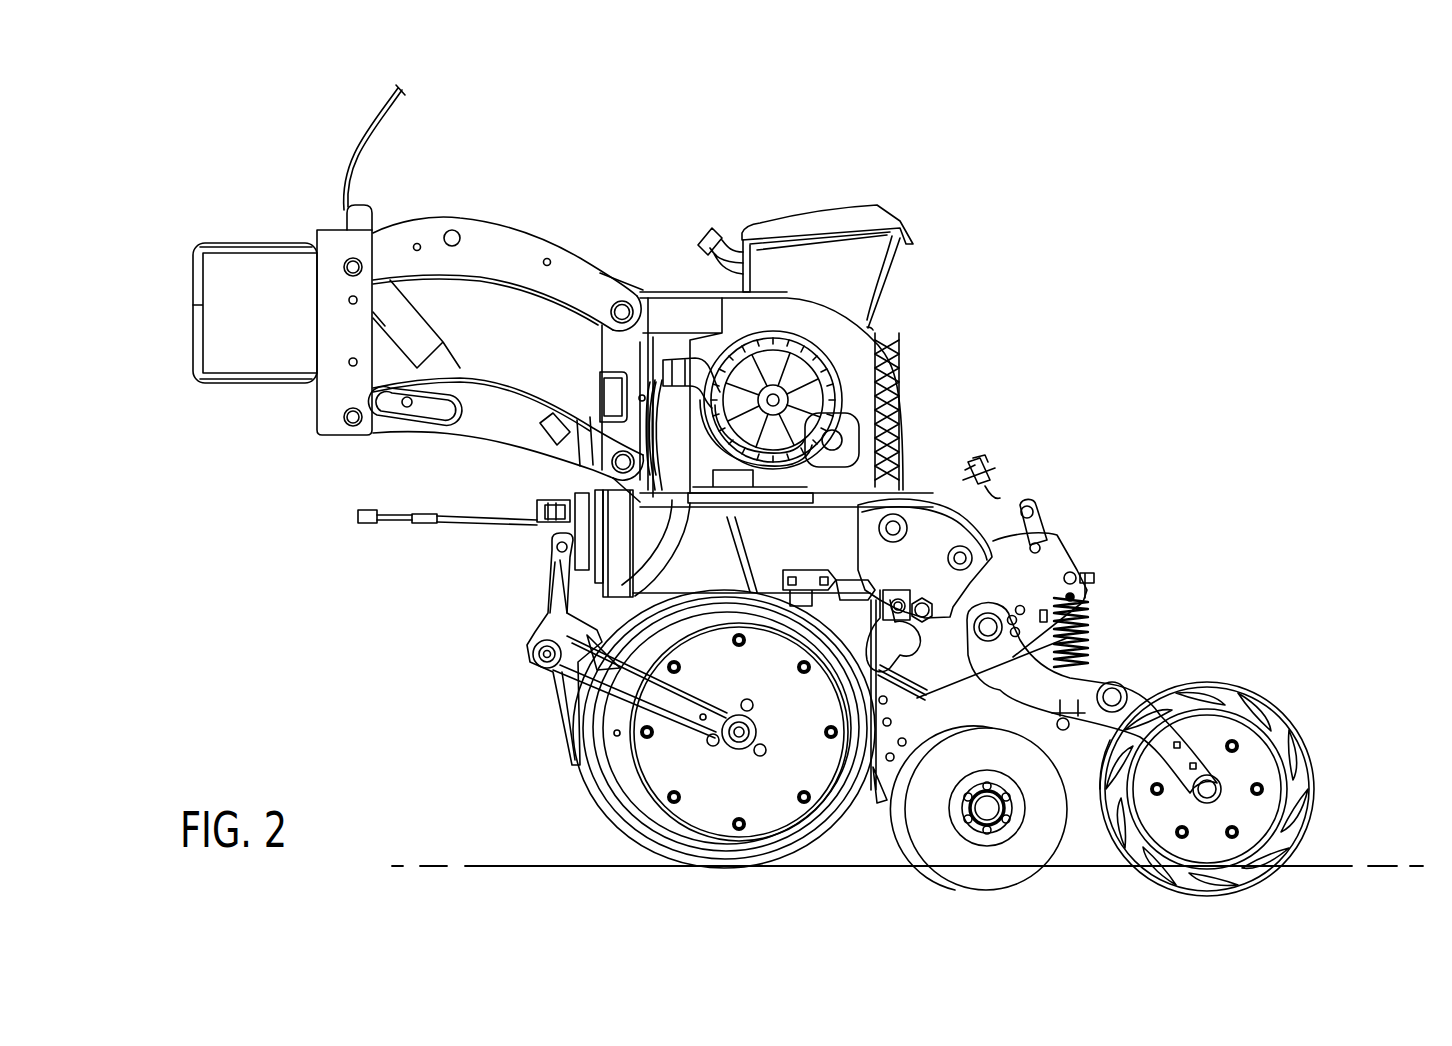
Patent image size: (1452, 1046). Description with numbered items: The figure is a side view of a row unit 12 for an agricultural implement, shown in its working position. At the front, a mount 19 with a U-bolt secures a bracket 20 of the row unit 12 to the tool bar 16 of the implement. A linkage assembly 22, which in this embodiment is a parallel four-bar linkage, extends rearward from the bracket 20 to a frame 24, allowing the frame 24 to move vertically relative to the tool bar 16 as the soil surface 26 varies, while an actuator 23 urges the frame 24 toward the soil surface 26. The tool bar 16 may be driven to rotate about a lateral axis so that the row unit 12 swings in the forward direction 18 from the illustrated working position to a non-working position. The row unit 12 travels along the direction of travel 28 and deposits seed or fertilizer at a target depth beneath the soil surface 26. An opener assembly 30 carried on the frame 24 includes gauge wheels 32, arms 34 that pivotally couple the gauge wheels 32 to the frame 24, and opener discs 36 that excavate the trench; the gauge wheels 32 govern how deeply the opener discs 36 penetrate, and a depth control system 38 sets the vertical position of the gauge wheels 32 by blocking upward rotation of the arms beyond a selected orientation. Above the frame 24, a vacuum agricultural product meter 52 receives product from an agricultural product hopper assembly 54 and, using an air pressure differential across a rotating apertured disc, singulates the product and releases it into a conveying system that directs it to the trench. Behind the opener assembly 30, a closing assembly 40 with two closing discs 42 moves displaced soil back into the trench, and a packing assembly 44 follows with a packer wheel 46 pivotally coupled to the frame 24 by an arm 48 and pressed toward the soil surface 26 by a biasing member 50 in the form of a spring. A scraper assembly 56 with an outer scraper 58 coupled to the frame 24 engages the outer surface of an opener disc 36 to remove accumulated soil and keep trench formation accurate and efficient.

The row unit 12 is at (940, 206).
The tool bar 16 is at (262, 258).
The forward direction 18 is at (572, 131).
The mount 19 is at (257, 243).
The bracket 20 is at (370, 210).
The linkage assembly 22 is at (495, 224).
The actuator 23 is at (420, 302).
The frame 24 is at (935, 513).
The soil surface 26 is at (482, 867).
The direction of travel 28 is at (408, 643).
The opener assembly 30 is at (576, 795).
The gauge wheels 32 is at (712, 810).
The arms 34 is at (610, 682).
The opener discs 36 is at (614, 812).
The depth control system 38 is at (1007, 456).
The closing assembly 40 is at (1036, 888).
The closing discs 42 is at (983, 867).
The packing assembly 44 is at (1267, 664).
The packer wheel 46 is at (1297, 767).
The arm 48 is at (1133, 682).
The biasing member 50 is at (1086, 620).
The vacuum agricultural product meter 52 is at (820, 368).
The agricultural product hopper assembly 54 is at (822, 216).
The scraper assembly 56 is at (825, 563).
The outer scraper 58 is at (833, 579).